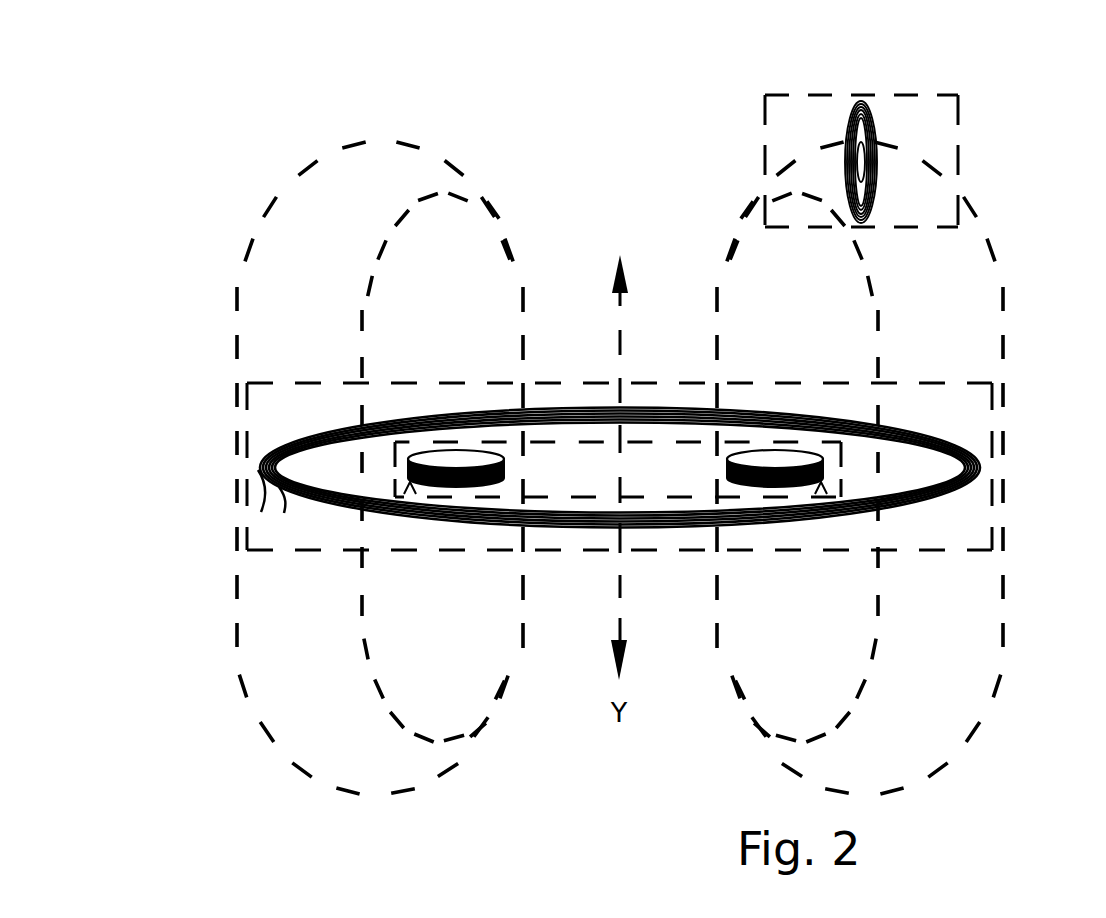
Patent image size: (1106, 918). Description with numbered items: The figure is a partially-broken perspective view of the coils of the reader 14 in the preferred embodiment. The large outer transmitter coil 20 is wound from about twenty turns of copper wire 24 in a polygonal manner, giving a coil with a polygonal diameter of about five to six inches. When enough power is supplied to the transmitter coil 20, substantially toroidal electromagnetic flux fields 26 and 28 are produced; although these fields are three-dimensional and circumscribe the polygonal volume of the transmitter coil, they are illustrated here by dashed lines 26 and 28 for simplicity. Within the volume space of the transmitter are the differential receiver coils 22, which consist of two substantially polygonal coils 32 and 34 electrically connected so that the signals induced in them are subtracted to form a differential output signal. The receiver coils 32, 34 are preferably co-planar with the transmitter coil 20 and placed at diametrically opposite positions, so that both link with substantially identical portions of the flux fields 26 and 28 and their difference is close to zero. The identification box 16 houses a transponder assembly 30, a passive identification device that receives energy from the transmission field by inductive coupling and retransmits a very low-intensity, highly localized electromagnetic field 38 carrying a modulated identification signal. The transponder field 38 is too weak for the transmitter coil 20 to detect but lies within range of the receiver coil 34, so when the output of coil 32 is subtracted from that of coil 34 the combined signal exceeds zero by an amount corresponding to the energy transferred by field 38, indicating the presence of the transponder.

The reader 14 is at (985, 383).
The identification box 16 is at (900, 227).
The transmitter coil 20 is at (305, 438).
The differential receiver coils 22 is at (842, 462).
The copper wire 24 is at (258, 472).
The flux field 26 is at (522, 308).
The flux field 28 is at (715, 296).
The transponder assembly 30 is at (866, 160).
The receiver coil 32 is at (484, 450).
The receiver coil 34 is at (760, 450).
The electromagnetic field 38 is at (846, 128).